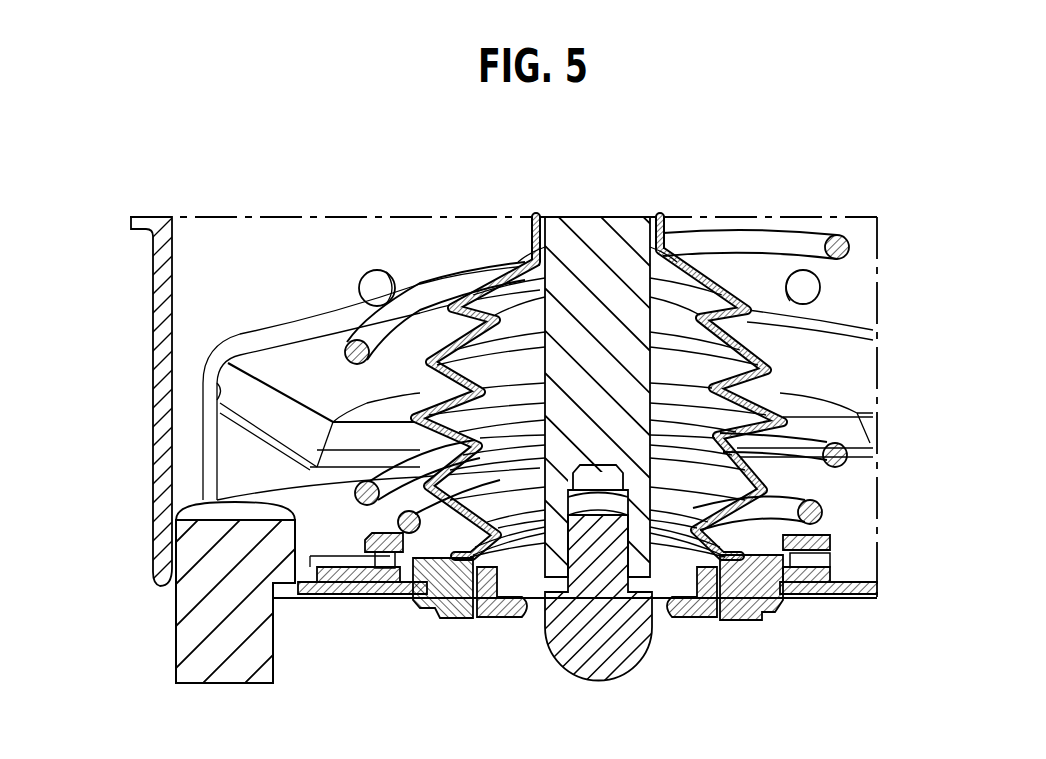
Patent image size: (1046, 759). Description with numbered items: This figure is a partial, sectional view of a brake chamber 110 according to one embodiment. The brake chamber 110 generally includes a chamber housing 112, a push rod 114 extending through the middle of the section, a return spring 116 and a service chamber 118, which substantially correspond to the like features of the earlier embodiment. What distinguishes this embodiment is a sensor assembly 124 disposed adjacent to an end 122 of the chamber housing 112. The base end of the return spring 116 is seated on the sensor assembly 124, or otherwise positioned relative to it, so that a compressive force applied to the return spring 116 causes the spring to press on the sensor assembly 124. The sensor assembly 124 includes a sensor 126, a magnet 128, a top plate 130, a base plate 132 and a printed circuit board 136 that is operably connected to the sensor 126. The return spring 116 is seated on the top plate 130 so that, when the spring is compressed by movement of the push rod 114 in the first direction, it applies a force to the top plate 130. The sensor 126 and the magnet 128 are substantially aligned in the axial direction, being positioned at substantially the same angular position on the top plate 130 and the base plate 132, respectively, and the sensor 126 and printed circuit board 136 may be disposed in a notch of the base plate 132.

The brake chamber 110 is at (140, 184).
The chamber housing 112 is at (157, 395).
The push rod 114 is at (607, 251).
The return spring 116 is at (808, 242).
The service chamber 118 is at (285, 262).
The end of the chamber housing 122 is at (403, 595).
The sensor assembly 124 is at (800, 590).
The sensor 126 is at (367, 565).
The magnet 128 is at (372, 523).
The top plate 130 is at (830, 545).
The base plate 132 is at (810, 587).
The printed circuit board 136 is at (347, 593).